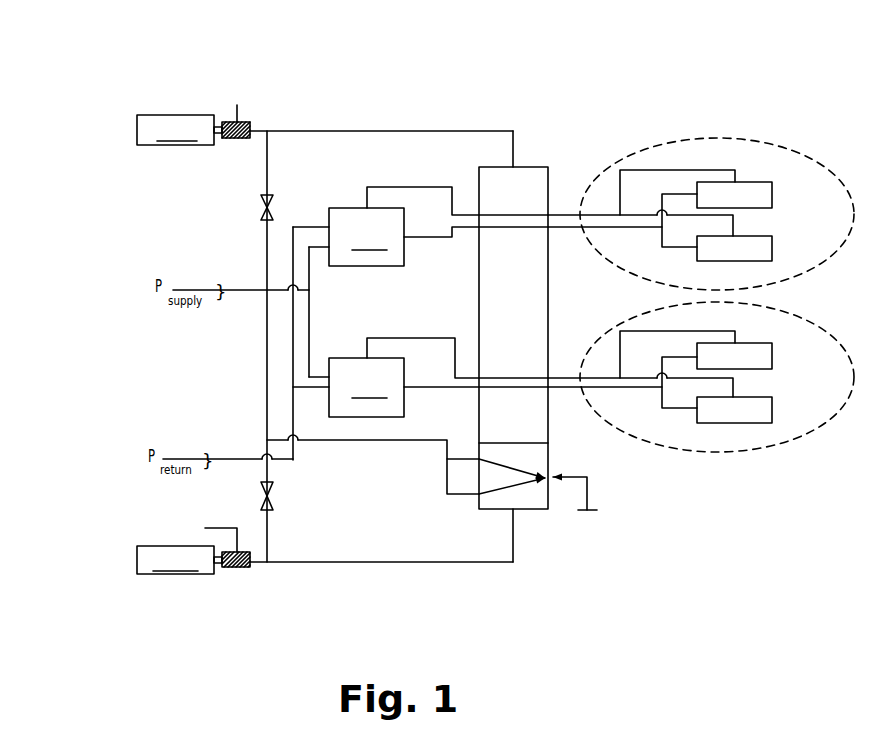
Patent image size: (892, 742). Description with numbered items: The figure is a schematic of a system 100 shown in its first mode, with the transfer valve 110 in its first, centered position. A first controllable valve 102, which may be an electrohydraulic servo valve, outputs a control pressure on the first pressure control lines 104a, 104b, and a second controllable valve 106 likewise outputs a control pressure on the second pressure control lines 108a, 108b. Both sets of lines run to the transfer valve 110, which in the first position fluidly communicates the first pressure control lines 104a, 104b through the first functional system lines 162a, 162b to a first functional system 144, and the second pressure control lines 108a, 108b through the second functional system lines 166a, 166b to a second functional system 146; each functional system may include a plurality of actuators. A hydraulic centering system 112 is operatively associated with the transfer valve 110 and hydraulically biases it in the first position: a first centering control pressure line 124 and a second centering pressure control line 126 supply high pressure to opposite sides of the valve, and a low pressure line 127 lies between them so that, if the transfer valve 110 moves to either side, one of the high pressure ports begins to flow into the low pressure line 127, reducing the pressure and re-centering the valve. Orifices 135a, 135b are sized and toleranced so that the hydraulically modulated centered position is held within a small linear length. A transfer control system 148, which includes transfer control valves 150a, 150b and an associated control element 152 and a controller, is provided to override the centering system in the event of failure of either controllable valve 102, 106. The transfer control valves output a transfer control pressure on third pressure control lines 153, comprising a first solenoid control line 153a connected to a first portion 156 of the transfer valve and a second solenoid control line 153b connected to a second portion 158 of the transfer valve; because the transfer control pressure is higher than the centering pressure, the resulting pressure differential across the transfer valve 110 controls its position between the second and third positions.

The system 100 is at (47, 35).
The first controllable valve 102 is at (366, 237).
The first pressure control line 104a is at (426, 185).
The first pressure control line 104b is at (428, 236).
The second controllable valve 106 is at (366, 387).
The second pressure control line 108a is at (445, 336).
The second pressure control line 108b is at (428, 385).
The transfer valve 110 is at (555, 163).
The hydraulic centering system 112 is at (545, 548).
The first centering control pressure line 124 is at (456, 495).
The second centering pressure control line 126 is at (463, 457).
The low pressure line 127 is at (588, 488).
The orifice 135a is at (260, 207).
The orifice 135b is at (261, 497).
The first functional system 144 is at (820, 166).
The second functional system 146 is at (820, 326).
The transfer control system 148 is at (137, 167).
The first return reservoir 150a is at (196, 107).
The second return reservoir 150b is at (193, 538).
The reservoir connection 152 is at (135, 115).
The third pressure control lines 153 is at (467, 120).
The first solenoid control line 153a is at (325, 130).
The second solenoid control line 153b is at (331, 562).
The first portion of the transfer valve 156 is at (537, 165).
The second portion of the transfer valve 158 is at (532, 510).
The first functional system line 162a is at (608, 212).
The first functional system line 162b is at (610, 230).
The second functional system line 166a is at (608, 376).
The second functional system line 166b is at (610, 390).